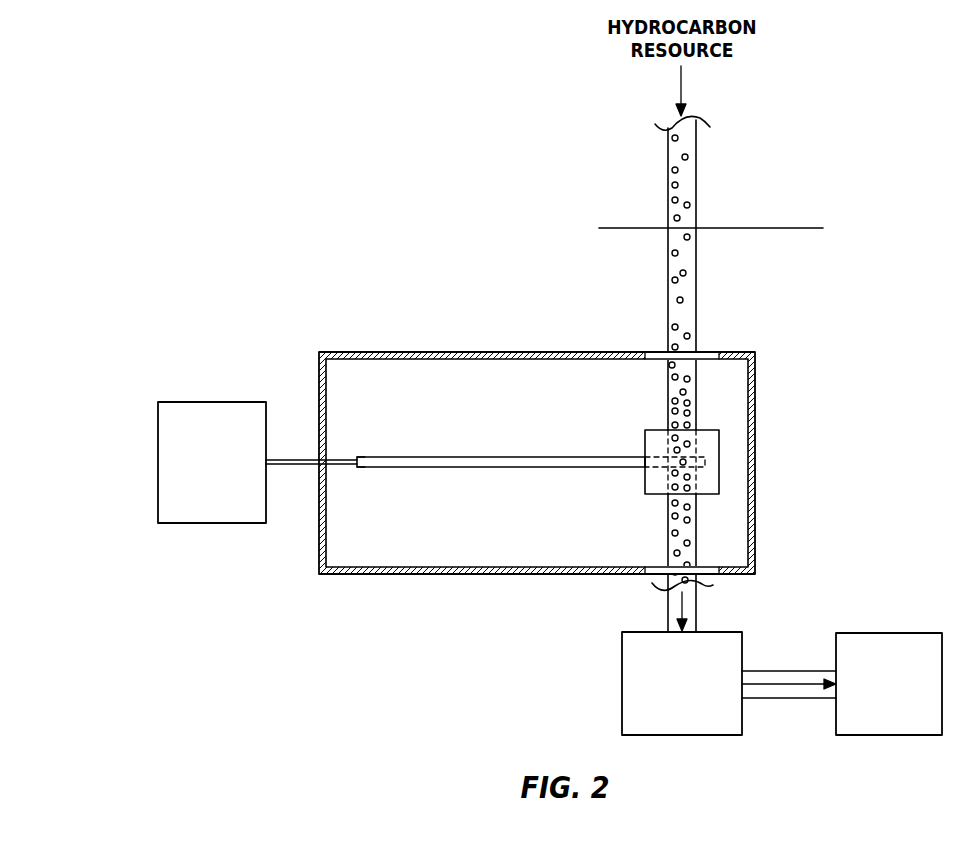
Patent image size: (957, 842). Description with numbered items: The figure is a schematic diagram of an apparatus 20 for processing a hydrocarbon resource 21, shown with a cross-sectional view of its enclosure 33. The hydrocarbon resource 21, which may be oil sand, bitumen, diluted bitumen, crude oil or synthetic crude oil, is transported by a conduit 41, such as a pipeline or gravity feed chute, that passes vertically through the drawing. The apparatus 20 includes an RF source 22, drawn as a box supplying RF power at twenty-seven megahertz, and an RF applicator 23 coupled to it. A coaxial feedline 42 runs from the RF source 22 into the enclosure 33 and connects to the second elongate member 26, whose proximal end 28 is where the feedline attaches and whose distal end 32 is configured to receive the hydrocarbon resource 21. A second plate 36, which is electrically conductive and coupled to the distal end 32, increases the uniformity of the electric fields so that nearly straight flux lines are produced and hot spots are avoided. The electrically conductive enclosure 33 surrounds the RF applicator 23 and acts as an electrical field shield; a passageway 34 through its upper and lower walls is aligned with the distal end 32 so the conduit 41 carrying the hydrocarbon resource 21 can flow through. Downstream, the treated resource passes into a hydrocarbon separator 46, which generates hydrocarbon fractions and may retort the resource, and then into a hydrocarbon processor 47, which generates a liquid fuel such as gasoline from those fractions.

The apparatus 20 is at (270, 212).
The hydrocarbon resource 21 is at (665, 185).
The RF source 22 is at (163, 402).
The RF applicator 23 is at (529, 396).
The second elongate member 26 is at (447, 455).
The proximal end 28 is at (358, 470).
The distal end 32 is at (722, 462).
The enclosure 33 is at (357, 352).
The passageway 34 is at (656, 352).
The second plate 36 is at (707, 445).
The conduit 41 is at (696, 220).
The coaxial feedline 42 is at (285, 482).
The hydrocarbon separator 46 is at (622, 705).
The hydrocarbon processor 47 is at (875, 633).